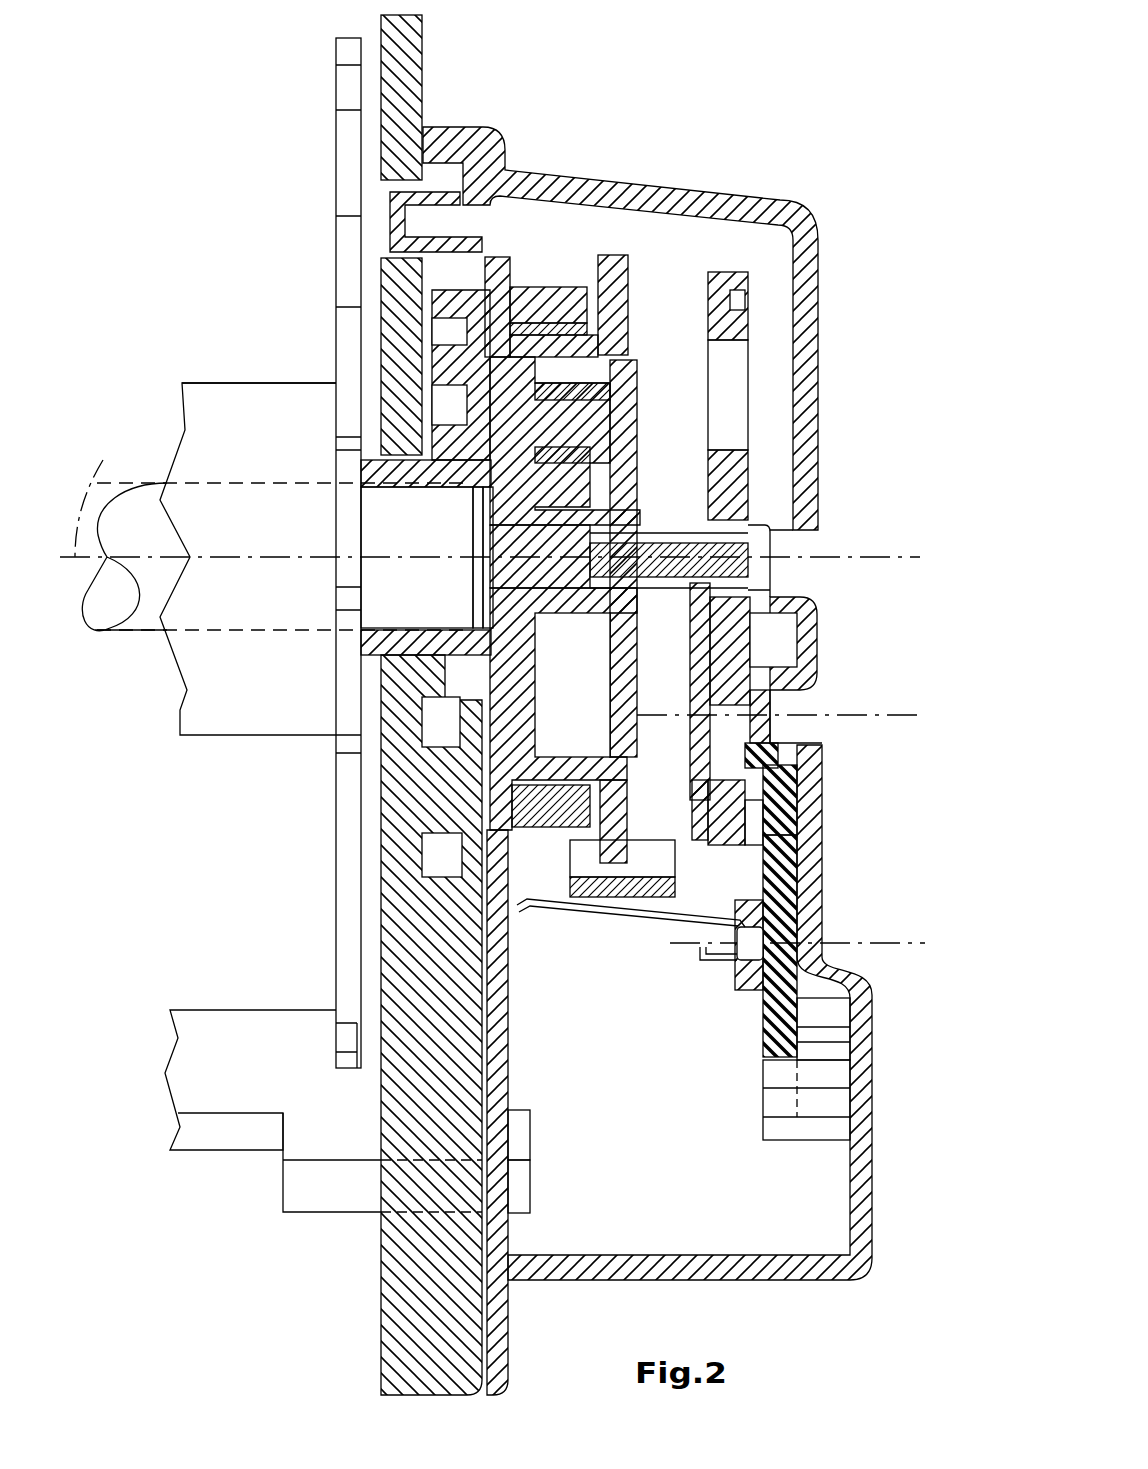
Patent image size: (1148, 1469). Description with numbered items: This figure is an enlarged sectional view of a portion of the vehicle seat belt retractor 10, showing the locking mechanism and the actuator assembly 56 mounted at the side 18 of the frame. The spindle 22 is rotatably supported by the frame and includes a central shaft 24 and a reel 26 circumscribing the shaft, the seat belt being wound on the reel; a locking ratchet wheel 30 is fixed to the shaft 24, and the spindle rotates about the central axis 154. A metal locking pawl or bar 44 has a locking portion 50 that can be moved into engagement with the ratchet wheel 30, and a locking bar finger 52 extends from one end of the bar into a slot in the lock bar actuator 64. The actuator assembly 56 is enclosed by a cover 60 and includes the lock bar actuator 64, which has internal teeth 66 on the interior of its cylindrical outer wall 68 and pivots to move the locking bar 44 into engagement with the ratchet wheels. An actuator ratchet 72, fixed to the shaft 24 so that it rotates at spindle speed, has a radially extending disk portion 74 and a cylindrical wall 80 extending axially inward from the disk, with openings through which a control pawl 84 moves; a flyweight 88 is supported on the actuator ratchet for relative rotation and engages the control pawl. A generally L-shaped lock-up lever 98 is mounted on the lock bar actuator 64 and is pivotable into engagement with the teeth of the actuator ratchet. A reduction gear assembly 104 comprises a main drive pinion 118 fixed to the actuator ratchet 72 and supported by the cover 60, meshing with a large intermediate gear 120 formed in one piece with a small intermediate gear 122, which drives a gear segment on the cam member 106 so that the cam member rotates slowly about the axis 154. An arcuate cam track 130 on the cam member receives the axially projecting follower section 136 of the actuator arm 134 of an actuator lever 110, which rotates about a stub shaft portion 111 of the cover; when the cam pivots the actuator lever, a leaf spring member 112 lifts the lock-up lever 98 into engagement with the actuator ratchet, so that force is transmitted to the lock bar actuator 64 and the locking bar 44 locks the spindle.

The vehicle seat belt retractor 10 is at (862, 165).
The side 18 is at (398, 1332).
The spindle 22 is at (250, 380).
The central shaft 24 is at (155, 618).
The reel 26 is at (215, 405).
The locking ratchet wheel 30 is at (348, 128).
The locking pawl or bar 44 is at (240, 1178).
The locking portion 50 is at (322, 1190).
The locking bar projection or finger 52 is at (527, 1185).
The actuator assembly 56 is at (614, 148).
The cover 60 is at (822, 228).
The lock bar actuator 64 is at (525, 236).
The internal teeth 66 is at (560, 285).
The cylindrical outer wall 68 is at (542, 285).
The actuator ratchet 72 is at (632, 252).
The disk portion 74 is at (630, 335).
The cylindrical wall 80 is at (612, 345).
The control pawl 84 is at (590, 475).
The flyweight 88 is at (623, 715).
The lock-up lever 98 is at (580, 867).
The reduction gear assembly 104 is at (772, 592).
The cam member 106 is at (752, 410).
The actuator lever 110 is at (818, 862).
The stub shaft portion 111 is at (808, 912).
The leaf spring member 112 is at (700, 908).
The main drive pinion 118 is at (684, 535).
The large intermediate gear 120 is at (692, 615).
The small intermediate gear 122 is at (785, 703).
The arcuate cam track 130 is at (750, 813).
The actuator arm 134 is at (818, 816).
The follower section 136 is at (780, 750).
The central axis 154 is at (97, 470).